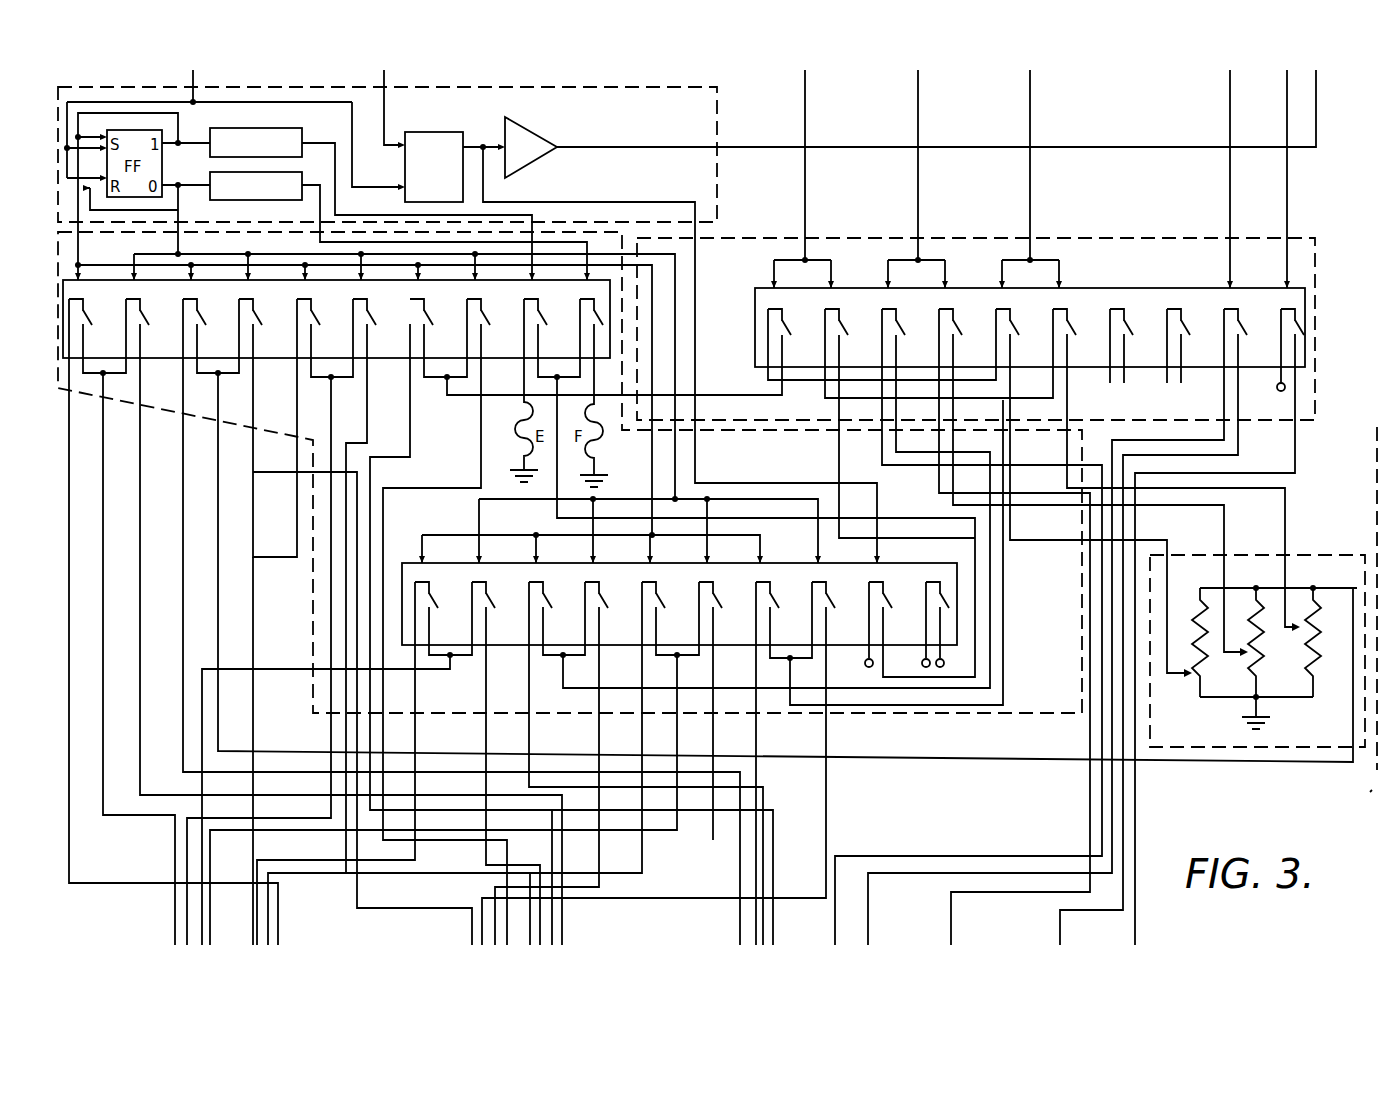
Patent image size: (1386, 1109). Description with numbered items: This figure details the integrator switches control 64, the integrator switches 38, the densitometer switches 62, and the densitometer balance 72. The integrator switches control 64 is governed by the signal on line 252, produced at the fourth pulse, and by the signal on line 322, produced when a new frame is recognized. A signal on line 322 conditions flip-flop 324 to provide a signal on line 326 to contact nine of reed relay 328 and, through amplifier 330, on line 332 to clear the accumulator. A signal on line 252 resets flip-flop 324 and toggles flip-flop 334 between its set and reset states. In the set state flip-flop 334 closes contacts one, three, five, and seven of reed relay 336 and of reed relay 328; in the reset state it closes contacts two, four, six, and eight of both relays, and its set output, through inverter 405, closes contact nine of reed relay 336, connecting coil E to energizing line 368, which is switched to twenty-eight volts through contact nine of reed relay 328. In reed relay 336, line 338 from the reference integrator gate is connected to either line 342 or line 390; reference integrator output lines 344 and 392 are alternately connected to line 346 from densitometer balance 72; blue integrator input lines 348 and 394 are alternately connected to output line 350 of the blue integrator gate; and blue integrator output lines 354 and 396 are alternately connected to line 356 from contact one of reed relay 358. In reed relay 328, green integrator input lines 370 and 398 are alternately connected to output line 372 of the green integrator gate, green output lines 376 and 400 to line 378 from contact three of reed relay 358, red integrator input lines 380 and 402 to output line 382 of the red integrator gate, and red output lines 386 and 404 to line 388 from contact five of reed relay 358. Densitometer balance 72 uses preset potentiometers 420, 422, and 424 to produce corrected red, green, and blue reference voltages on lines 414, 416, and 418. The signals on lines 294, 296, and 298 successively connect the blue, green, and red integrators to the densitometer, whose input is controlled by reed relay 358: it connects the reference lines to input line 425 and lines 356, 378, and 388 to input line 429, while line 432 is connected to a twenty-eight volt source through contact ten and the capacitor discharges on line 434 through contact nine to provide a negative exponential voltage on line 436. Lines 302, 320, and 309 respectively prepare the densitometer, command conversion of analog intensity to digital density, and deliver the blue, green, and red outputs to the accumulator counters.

The dashed enclosure of mode selector switch section 38 is at (86, 398).
The dashed enclosure of data input switch section 62 is at (852, 238).
The integrator switches control 64 is at (717, 122).
The densitometer balance 72 is at (1155, 745).
The line 252 is at (193, 80).
The line 294 is at (805, 108).
The line 296 is at (918, 108).
The line 298 is at (1030, 108).
The line 302 is at (1287, 112).
The line 309 is at (1350, 805).
The line 320 is at (1230, 112).
The line 322 is at (384, 80).
The flip-flop 324 is at (428, 132).
The line 326 is at (536, 202).
The reed relay 328 is at (679, 627).
The amplifier 330 is at (535, 135).
The line 332 is at (838, 147).
The flip-flop 334 is at (163, 165).
The reed relay 336 is at (336, 319).
The line 338 is at (103, 532).
The line 342 is at (69, 638).
The output line 344 is at (183, 455).
The line 346 is at (218, 480).
The input line 348 is at (292, 510).
The output line 350 is at (331, 572).
The output line 354 is at (235, 200).
The line 356 is at (465, 398).
The reed relay 358 is at (1030, 350).
The line 368 is at (560, 499).
The input line 370 is at (415, 685).
The output line 372 is at (262, 670).
The output line 376 is at (529, 682).
The line 378 is at (580, 688).
The input line 380 is at (650, 668).
The output line 382 is at (677, 672).
The output line 386 is at (756, 675).
The line 388 is at (805, 705).
The input line 390 is at (148, 562).
The output line 392 is at (253, 412).
The input line 394 is at (372, 400).
The output line 396 is at (481, 470).
The input line 398 is at (486, 652).
The output line 400 is at (599, 640).
The input line 402 is at (713, 715).
The output line 404 is at (826, 725).
The inverter 405 is at (285, 128).
The line 414 is at (1285, 518).
The line 416 is at (1224, 518).
The line 418 is at (1167, 540).
The potentiometer 420 is at (1318, 605).
The potentiometer 422 is at (1262, 606).
The potentiometer 424 is at (1196, 608).
The input line 425 is at (945, 493).
The input line 429 is at (940, 470).
The line 432 is at (1285, 448).
The line 434 is at (1225, 444).
The line 436 is at (1186, 440).